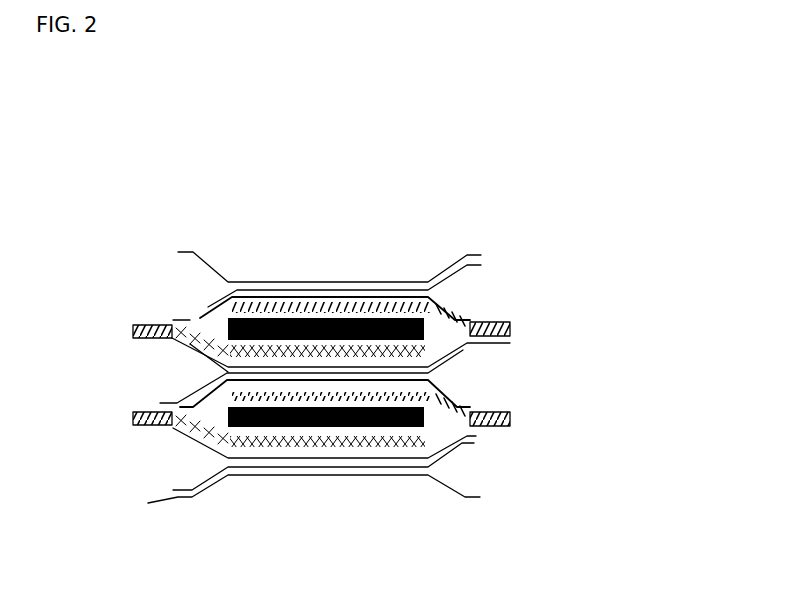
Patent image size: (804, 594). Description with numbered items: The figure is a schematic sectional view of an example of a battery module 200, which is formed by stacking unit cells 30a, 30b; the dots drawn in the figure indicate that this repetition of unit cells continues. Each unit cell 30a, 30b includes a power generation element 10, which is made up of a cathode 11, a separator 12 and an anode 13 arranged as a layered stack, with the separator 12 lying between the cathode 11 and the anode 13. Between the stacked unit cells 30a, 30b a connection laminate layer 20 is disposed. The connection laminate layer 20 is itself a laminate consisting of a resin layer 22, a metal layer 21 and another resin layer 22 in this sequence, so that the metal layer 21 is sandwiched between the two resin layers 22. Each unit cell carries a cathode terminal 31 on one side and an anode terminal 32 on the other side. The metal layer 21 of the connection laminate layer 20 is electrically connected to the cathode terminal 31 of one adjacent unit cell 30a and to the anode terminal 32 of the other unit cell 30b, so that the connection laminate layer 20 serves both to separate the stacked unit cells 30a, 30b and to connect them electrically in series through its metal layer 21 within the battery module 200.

The battery module 200 is at (151, 128).
The unit cell 30a is at (583, 265).
The unit cell 30b is at (583, 380).
The connection laminate layer 20 is at (355, 214).
The metal layer 21 is at (316, 292).
The resin layer 22 is at (284, 297).
The power generation element 10 is at (507, 203).
The cathode 11 is at (369, 308).
The separator 12 is at (398, 320).
The anode 13 is at (416, 352).
The cathode terminal 31 is at (502, 322).
The anode terminal 32 is at (134, 325).